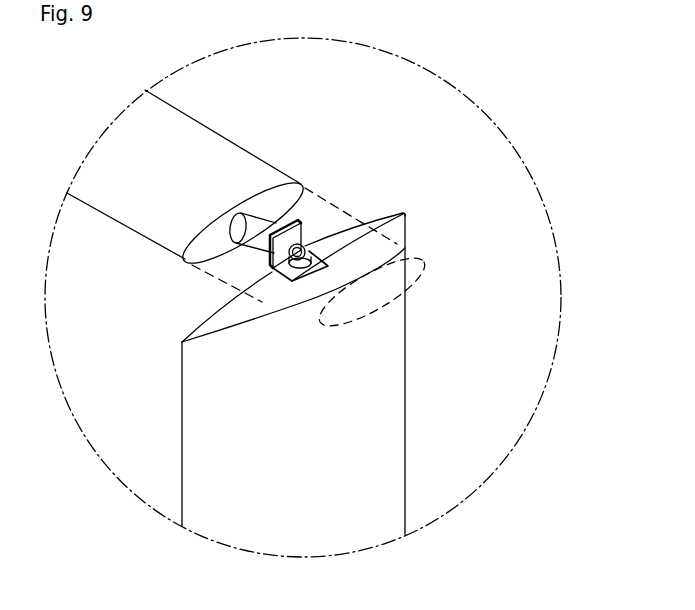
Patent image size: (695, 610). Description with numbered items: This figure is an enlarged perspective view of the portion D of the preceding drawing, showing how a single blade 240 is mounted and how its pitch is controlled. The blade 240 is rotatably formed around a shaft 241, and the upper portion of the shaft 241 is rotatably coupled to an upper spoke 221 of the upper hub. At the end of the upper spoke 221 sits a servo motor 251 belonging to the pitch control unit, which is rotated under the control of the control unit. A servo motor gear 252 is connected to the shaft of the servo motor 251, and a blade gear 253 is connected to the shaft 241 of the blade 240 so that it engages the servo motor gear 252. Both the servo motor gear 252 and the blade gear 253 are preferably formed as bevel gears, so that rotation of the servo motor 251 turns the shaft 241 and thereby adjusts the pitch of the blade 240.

The portion D is at (561, 257).
The blade 240 is at (408, 345).
The shaft 241 is at (406, 248).
The upper spoke 221 is at (140, 226).
The servo motor 251 is at (253, 208).
The servo motor gear 252 is at (298, 237).
The blade gear 253 is at (310, 253).